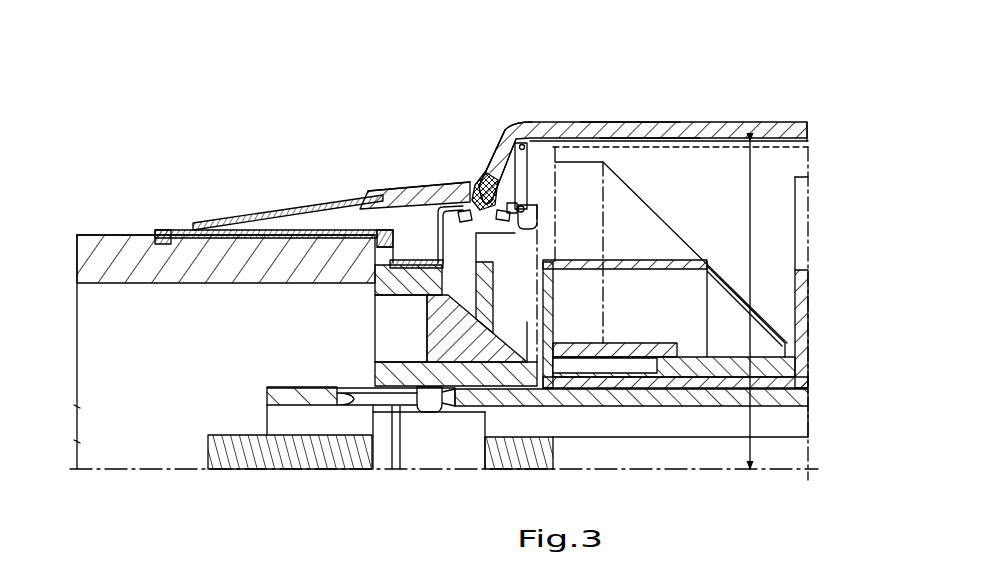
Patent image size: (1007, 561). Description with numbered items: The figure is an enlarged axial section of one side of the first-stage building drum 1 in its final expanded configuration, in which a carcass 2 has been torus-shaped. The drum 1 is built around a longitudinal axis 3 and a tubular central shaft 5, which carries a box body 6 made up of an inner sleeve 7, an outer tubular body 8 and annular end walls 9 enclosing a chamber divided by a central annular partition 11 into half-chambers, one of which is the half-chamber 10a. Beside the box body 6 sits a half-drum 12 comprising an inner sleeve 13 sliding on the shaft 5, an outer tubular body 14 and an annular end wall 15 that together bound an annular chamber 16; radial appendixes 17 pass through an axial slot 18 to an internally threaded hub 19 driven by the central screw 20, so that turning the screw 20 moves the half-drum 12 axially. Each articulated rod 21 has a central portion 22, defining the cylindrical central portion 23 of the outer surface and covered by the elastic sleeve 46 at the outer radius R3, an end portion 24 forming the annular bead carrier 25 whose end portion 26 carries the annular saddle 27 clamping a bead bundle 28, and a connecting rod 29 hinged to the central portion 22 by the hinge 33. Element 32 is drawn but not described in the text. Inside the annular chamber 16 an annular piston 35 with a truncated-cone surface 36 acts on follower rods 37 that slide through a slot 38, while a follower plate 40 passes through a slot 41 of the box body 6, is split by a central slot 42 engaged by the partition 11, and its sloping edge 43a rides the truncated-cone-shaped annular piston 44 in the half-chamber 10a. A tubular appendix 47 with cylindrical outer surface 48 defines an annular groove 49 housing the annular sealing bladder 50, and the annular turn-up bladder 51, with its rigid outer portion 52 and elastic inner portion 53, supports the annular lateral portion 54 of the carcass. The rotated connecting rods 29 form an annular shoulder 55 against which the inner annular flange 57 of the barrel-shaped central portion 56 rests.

The first-stage building drum 1 is at (115, 115).
The carcass 2 is at (700, 140).
The longitudinal axis 3 is at (603, 471).
The tubular central shaft 5 is at (680, 400).
The box body 6 is at (505, 385).
The inner sleeve 7 is at (583, 400).
The outer tubular body 8 is at (573, 263).
The annular end walls 9 is at (548, 312).
The half-chamber 10a is at (642, 405).
The central annular partition 11 is at (800, 303).
The half-drum 12 is at (375, 367).
The inner sleeve 13 is at (393, 411).
The outer tubular body 14 is at (375, 286).
The annular end wall 15 is at (527, 380).
The annular chamber 16 is at (400, 318).
The radial appendixes 17 is at (421, 413).
The axial slot 18 is at (357, 397).
The internally threaded hub 19 is at (432, 450).
The central screw 20 is at (233, 469).
The articulated rod 21 is at (665, 140).
The central portion 22 is at (590, 140).
The cylindrical central portion 23 is at (640, 140).
The end portion 24 is at (523, 245).
The annular bead carrier 25 is at (488, 230).
The end portion of outer surface 26 is at (478, 235).
The annular saddle 27 is at (470, 222).
The bead bundle 28 is at (490, 183).
The connecting rod 29 is at (520, 198).
The holder 32 is at (535, 226).
The hinge 33 is at (510, 145).
The annular piston 35 is at (417, 413).
The truncated-cone-shaped surface 36 is at (483, 365).
The follower rod 37 is at (395, 196).
The slot 38 is at (448, 285).
The follower plate 40 is at (765, 242).
The slot 41 is at (605, 265).
The central slot 42 is at (795, 218).
The sloping edge 43a is at (677, 275).
The truncated-cone-shaped annular piston 44 is at (715, 300).
The elastic sleeve 46 is at (720, 140).
The tubular appendix 47 is at (107, 252).
The cylindrical outer surface 48 is at (137, 232).
The annular groove 49 is at (370, 206).
The annular sealing bladder 50 is at (427, 235).
The annular turn-up bladder 51 is at (205, 230).
The outer portion 52 is at (178, 237).
The inner portion 53 is at (240, 232).
The annular lateral portion 54 is at (420, 270).
The annular shoulder 55 is at (540, 170).
The barrel-shaped central portion 56 is at (620, 133).
The inner annular flange 57 is at (510, 165).
The outer radius R3 is at (750, 225).